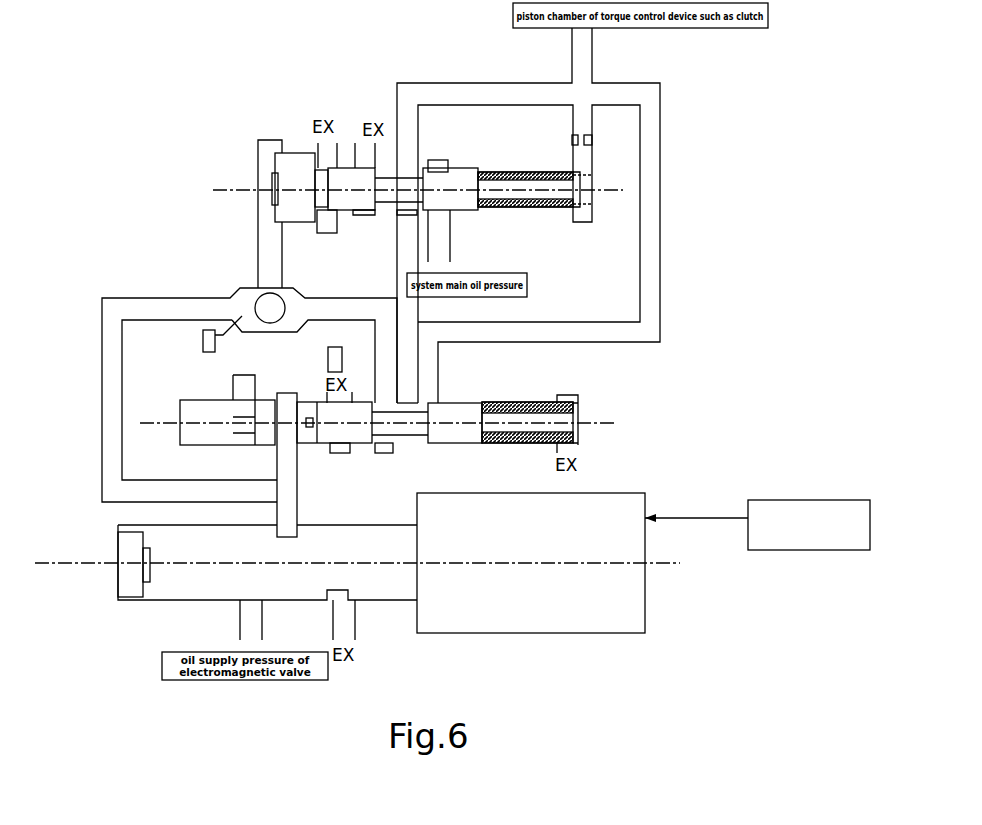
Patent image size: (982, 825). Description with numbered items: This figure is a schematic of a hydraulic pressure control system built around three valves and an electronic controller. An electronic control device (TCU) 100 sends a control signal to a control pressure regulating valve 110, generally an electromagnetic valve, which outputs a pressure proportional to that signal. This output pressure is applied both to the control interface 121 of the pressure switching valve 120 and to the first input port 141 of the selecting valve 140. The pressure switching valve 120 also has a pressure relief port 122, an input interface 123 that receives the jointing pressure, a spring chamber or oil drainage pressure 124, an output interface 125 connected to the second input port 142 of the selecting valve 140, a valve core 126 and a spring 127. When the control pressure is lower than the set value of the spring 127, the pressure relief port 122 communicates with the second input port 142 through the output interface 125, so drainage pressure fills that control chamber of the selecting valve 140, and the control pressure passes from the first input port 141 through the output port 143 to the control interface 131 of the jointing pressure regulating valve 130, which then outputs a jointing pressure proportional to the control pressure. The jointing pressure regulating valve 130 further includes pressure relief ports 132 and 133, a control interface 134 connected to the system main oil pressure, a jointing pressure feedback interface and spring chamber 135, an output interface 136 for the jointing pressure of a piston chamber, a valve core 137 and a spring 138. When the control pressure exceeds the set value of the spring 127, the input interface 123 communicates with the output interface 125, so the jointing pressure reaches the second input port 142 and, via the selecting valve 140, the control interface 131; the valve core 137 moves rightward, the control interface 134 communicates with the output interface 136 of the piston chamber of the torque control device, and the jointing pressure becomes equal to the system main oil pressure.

The electronic control device (TCU) 100 is at (797, 540).
The control pressure regulating valve 110 is at (637, 587).
The pressure switching valve 120 is at (180, 420).
The control interface 121 is at (290, 397).
The pressure relief port 122 is at (335, 448).
The input interface 123 is at (432, 400).
The spring chamber or oil drainage pressure 124 is at (582, 395).
The output interface 125 is at (387, 448).
The valve core 126 is at (370, 417).
The spring 127 is at (563, 438).
The jointing pressure regulating valve 130 is at (258, 162).
The control interface 131 is at (273, 145).
The pressure relief port 132 is at (322, 220).
The pressure relief port 133 is at (368, 213).
The control interface 134 is at (445, 160).
The jointing pressure feedback interface and spring chamber 135 is at (575, 218).
The output interface 136 is at (405, 213).
The valve core 137 is at (423, 187).
The spring 138 is at (497, 210).
The selecting valve 140 is at (230, 293).
The first input port 141 is at (212, 334).
The second input port 142 is at (302, 307).
The output port 143 is at (258, 280).